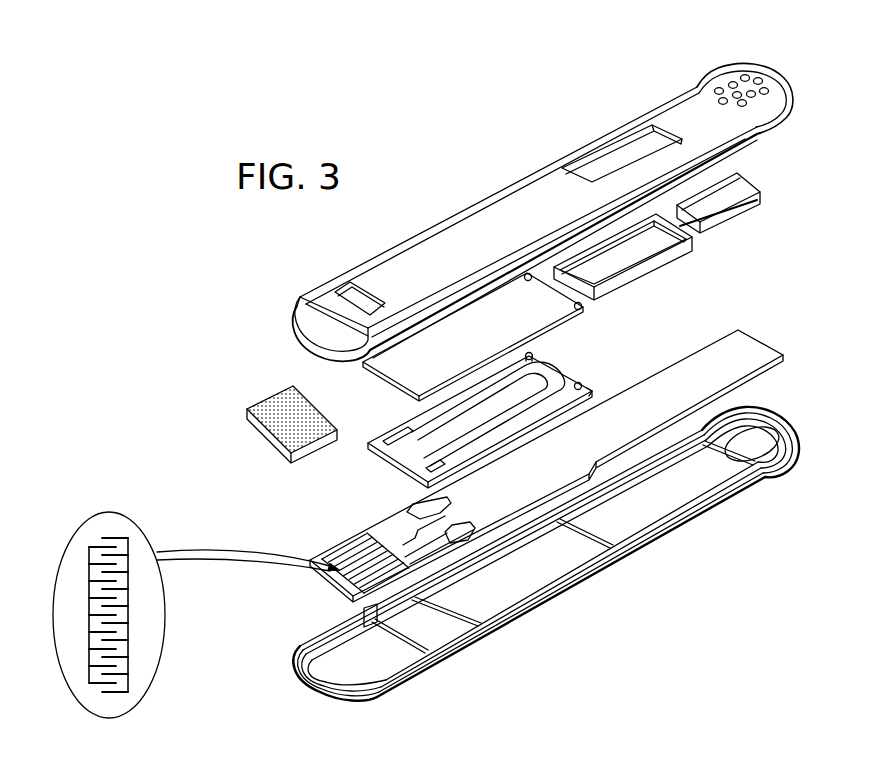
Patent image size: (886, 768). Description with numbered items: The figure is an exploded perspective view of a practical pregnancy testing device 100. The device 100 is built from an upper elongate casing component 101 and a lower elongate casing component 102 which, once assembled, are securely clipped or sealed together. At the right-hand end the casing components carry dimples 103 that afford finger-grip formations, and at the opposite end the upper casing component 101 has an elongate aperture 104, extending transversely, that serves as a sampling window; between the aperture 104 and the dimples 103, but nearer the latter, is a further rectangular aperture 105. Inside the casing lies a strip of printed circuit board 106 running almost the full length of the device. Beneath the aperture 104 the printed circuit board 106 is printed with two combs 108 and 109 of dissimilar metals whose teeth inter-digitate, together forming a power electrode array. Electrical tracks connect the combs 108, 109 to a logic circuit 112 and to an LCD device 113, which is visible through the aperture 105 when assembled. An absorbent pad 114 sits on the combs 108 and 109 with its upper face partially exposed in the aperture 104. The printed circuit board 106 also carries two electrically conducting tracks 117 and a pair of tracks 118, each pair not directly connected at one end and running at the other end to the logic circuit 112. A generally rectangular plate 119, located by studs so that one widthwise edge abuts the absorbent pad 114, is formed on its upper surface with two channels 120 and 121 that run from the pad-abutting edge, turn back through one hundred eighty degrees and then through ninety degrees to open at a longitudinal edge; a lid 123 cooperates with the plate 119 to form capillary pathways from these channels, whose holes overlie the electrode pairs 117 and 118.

The pregnancy testing device 100 is at (580, 125).
The upper elongate casing component 101 is at (642, 116).
The lower elongate casing component 102 is at (703, 512).
The dimples 103 is at (768, 88).
The elongate aperture 104 is at (342, 294).
The rectangular aperture 105 is at (580, 168).
The printed circuit board 106 is at (763, 343).
The comb 108 is at (318, 540).
The comb 109 is at (368, 560).
The logic circuit 112 is at (740, 210).
The LCD device 113 is at (654, 268).
The absorbent pad 114 is at (282, 393).
The electrically conducting tracks 117 is at (405, 512).
The pair of tracks 118 is at (473, 530).
The rectangular plate 119 is at (580, 383).
The channel 120 is at (543, 360).
The channel 121 is at (596, 388).
The lid 123 is at (423, 365).